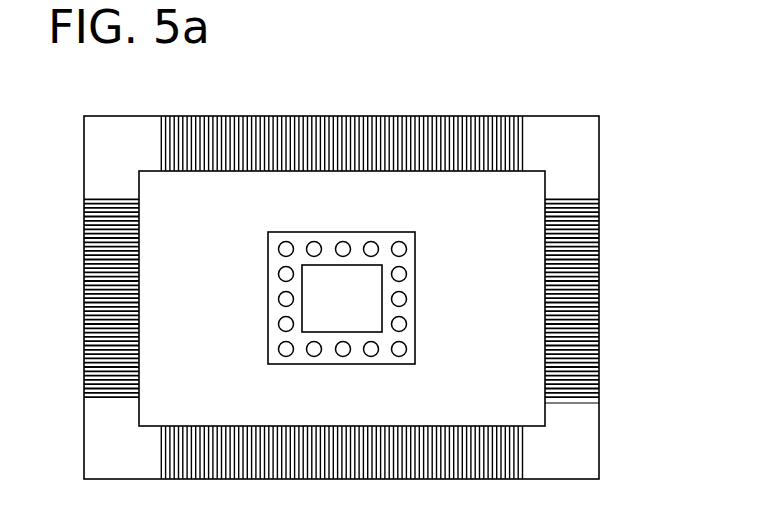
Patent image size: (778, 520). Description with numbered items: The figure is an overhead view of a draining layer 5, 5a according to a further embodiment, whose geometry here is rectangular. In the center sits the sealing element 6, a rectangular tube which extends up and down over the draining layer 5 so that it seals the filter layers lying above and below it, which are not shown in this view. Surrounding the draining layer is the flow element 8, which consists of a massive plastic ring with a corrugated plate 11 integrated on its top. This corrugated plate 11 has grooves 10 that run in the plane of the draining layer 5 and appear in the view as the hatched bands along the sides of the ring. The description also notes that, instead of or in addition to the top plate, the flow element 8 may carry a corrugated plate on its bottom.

The draining layer 5 is at (342, 244).
The draining layer 5a is at (377, 187).
The sealing element 6 is at (299, 238).
The flow element 8 is at (617, 130).
The grooves 10 is at (599, 231).
The corrugated plate 11 is at (599, 372).